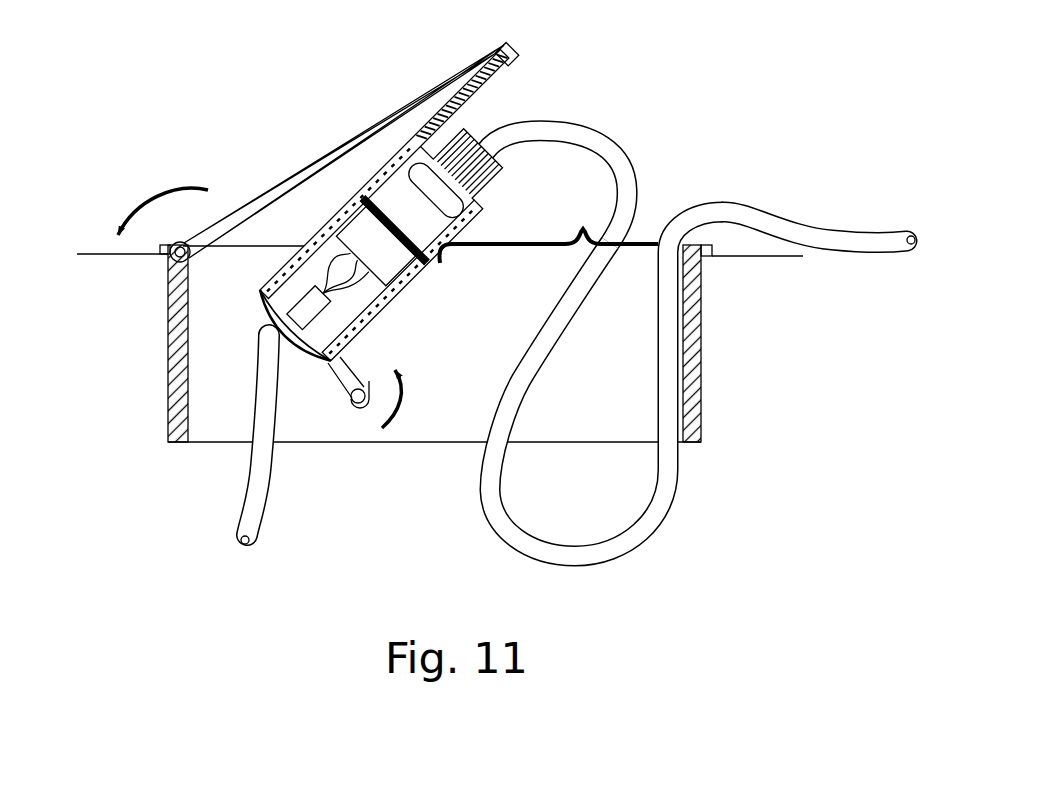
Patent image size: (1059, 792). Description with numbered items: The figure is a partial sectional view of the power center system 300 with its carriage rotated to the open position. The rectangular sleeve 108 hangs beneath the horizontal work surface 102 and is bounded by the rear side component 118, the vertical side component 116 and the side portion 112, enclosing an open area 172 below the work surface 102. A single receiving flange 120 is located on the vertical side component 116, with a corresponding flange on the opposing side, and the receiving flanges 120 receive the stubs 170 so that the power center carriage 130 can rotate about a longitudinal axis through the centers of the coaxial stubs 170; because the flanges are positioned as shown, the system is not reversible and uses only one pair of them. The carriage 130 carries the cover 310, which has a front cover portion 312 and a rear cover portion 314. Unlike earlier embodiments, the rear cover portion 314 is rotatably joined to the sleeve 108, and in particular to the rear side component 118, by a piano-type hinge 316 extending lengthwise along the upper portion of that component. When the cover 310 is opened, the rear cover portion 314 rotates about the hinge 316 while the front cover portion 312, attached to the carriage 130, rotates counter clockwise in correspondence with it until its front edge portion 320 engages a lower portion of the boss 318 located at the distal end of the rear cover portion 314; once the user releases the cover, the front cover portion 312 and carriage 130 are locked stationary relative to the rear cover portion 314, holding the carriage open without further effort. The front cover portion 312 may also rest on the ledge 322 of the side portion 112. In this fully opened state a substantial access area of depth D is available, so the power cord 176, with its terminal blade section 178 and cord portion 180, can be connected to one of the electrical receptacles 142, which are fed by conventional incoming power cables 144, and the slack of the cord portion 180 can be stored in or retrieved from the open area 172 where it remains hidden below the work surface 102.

The power center system 300 is at (258, 68).
The cover 310 is at (388, 256).
The front cover portion 312 is at (468, 107).
The rear cover portion 314 is at (328, 150).
The piano-type hinge 316 is at (183, 240).
The boss 318 is at (508, 62).
The front edge portion 320 is at (496, 46).
The ledge 322 is at (686, 248).
The power center carriage 130 is at (578, 354).
The power cord 176 is at (761, 171).
The terminal blade section 178 is at (447, 218).
The work surface 102 is at (740, 258).
The rectangular sleeve 108 is at (432, 329).
The side portion 112 is at (703, 428).
The vertical side component 116 is at (438, 407).
The rear side component 118 is at (167, 419).
The receiving flange 120 is at (454, 435).
The electrical receptacle 142 is at (397, 270).
The incoming power cable 144 is at (263, 515).
The stub 170 is at (350, 405).
The open area 172 is at (607, 442).
The cord portion 180 is at (646, 528).